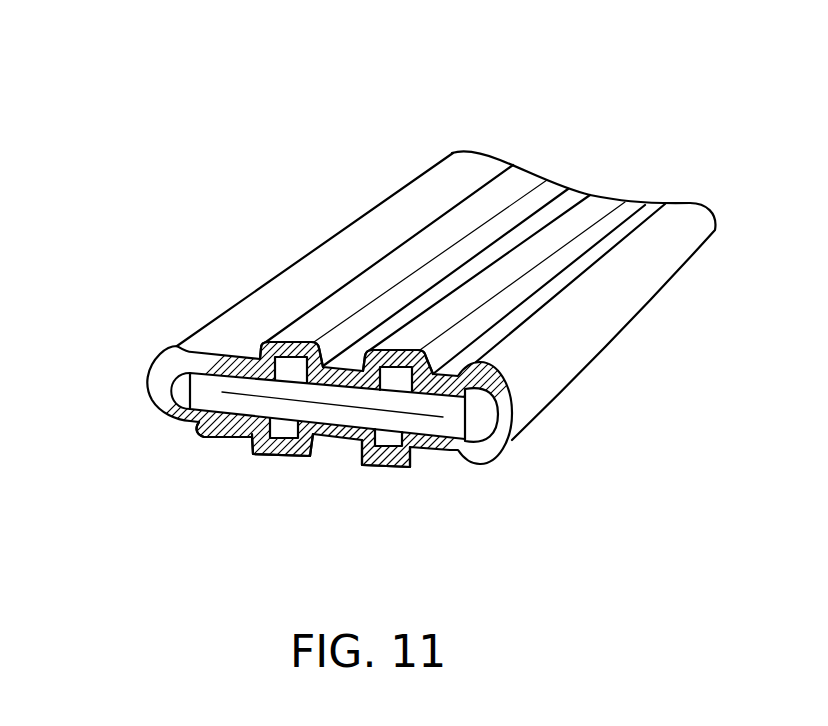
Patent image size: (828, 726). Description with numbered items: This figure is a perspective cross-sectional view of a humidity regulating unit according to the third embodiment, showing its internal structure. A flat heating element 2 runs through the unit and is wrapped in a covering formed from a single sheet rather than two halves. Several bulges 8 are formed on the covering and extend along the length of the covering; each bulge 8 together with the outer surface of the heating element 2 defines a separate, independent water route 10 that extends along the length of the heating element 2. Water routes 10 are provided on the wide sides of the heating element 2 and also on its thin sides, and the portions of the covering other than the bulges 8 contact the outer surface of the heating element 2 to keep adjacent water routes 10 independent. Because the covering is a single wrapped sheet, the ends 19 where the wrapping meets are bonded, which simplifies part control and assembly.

The heating element 2 is at (456, 436).
The bulges 8 is at (472, 293).
The water route 10 is at (382, 438).
The ends 19 is at (224, 439).